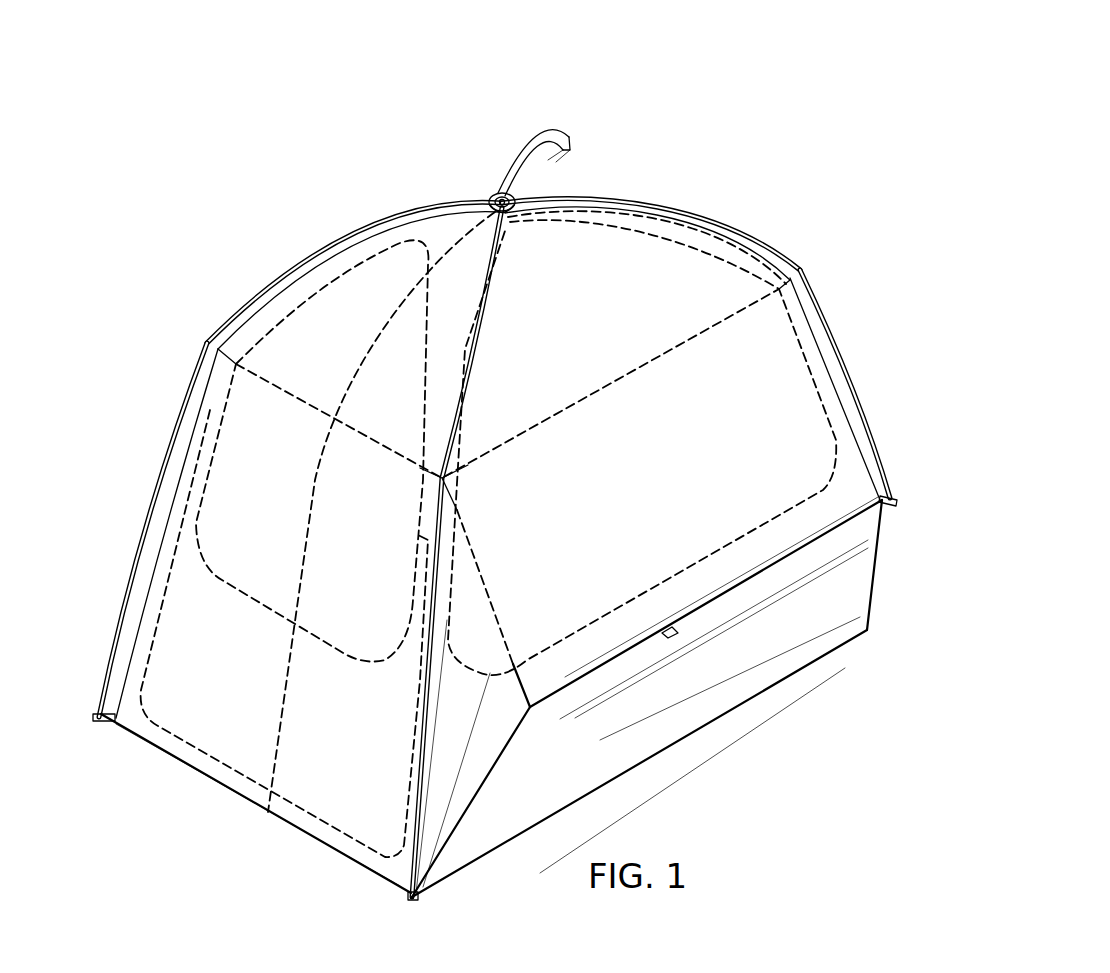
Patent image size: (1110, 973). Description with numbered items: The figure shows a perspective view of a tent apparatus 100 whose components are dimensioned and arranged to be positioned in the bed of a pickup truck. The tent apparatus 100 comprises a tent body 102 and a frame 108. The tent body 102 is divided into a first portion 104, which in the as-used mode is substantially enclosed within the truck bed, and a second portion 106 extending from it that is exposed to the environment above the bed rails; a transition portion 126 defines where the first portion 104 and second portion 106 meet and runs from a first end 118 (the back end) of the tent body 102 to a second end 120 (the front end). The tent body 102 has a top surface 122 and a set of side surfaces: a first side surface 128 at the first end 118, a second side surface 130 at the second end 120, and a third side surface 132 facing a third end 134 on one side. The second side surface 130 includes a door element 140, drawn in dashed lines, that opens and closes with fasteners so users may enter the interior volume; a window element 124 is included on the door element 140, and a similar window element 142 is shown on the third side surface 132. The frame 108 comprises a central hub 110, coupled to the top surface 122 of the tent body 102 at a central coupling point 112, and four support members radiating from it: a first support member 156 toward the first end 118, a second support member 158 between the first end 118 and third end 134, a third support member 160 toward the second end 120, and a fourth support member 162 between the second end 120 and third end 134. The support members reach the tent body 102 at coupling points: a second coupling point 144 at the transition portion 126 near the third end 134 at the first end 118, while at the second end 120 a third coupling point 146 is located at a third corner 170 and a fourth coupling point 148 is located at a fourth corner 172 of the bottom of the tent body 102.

The tent apparatus 100 is at (672, 59).
The tent body 102 is at (810, 301).
The first portion 104 is at (770, 668).
The second portion 106 is at (862, 478).
The frame 108 is at (322, 250).
The central hub 110 is at (496, 197).
The central coupling point 112 is at (490, 203).
The first end 118 is at (890, 591).
The second end 120 is at (335, 838).
The top surface 122 is at (520, 188).
The window element 124 is at (210, 458).
The transition portion 126 is at (878, 514).
The first side surface 128 is at (620, 185).
The second side surface 130 is at (380, 862).
The third side surface 132 is at (716, 596).
The third end 134 is at (700, 730).
The door element 140 is at (160, 603).
The window element 142 is at (820, 378).
The second coupling point 144 is at (892, 505).
The third coupling point 146 is at (97, 722).
The fourth coupling point 148 is at (418, 898).
The first support member 156 is at (553, 143).
The second support member 158 is at (722, 222).
The third support member 160 is at (228, 318).
The fourth support member 162 is at (479, 320).
The third corner 170 is at (117, 722).
The fourth corner 172 is at (418, 887).